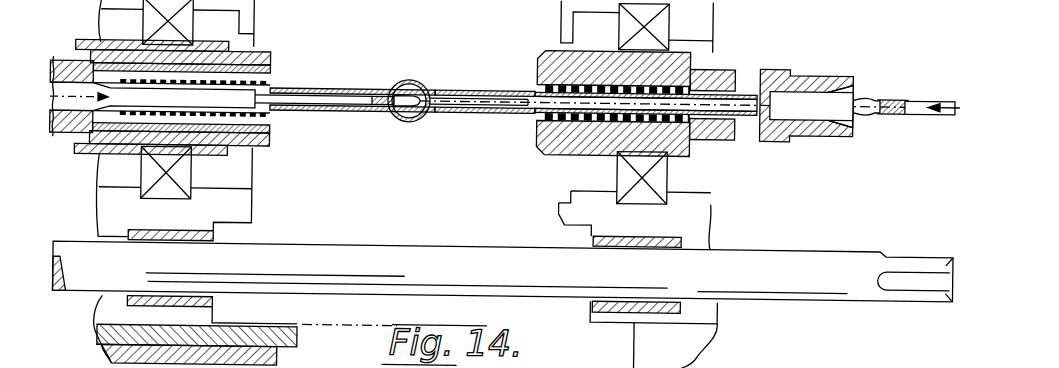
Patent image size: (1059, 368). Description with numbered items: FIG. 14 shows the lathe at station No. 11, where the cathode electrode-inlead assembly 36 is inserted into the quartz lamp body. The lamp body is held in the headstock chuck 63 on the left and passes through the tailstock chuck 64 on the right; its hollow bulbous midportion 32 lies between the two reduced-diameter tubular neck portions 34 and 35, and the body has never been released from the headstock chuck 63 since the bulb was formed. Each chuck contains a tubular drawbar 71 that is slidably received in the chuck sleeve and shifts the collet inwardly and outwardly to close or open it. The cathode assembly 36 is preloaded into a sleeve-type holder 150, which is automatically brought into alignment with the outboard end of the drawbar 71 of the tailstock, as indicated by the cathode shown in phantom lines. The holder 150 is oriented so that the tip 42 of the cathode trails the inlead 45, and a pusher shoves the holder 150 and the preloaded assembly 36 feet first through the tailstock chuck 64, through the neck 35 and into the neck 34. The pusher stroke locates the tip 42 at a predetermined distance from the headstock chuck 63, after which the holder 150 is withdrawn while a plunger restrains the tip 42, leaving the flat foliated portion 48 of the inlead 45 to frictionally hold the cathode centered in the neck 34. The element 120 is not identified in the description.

The station No. 11 is at (466, 208).
The hollow bulbous midportion 32 is at (411, 80).
The tubular neck portion 34 is at (334, 89).
The tubular neck portion 35 is at (462, 90).
The electrode-inlead assembly 36 is at (366, 86).
The tip 42 is at (398, 110).
The inlead wire 45 is at (316, 108).
The foliated portion 48 is at (357, 108).
The headstock chuck 63 is at (280, 42).
The tailstock chuck 64 is at (530, 38).
The drawbar 71 is at (815, 74).
The rod 120 is at (490, 91).
The holder 150 is at (470, 107).